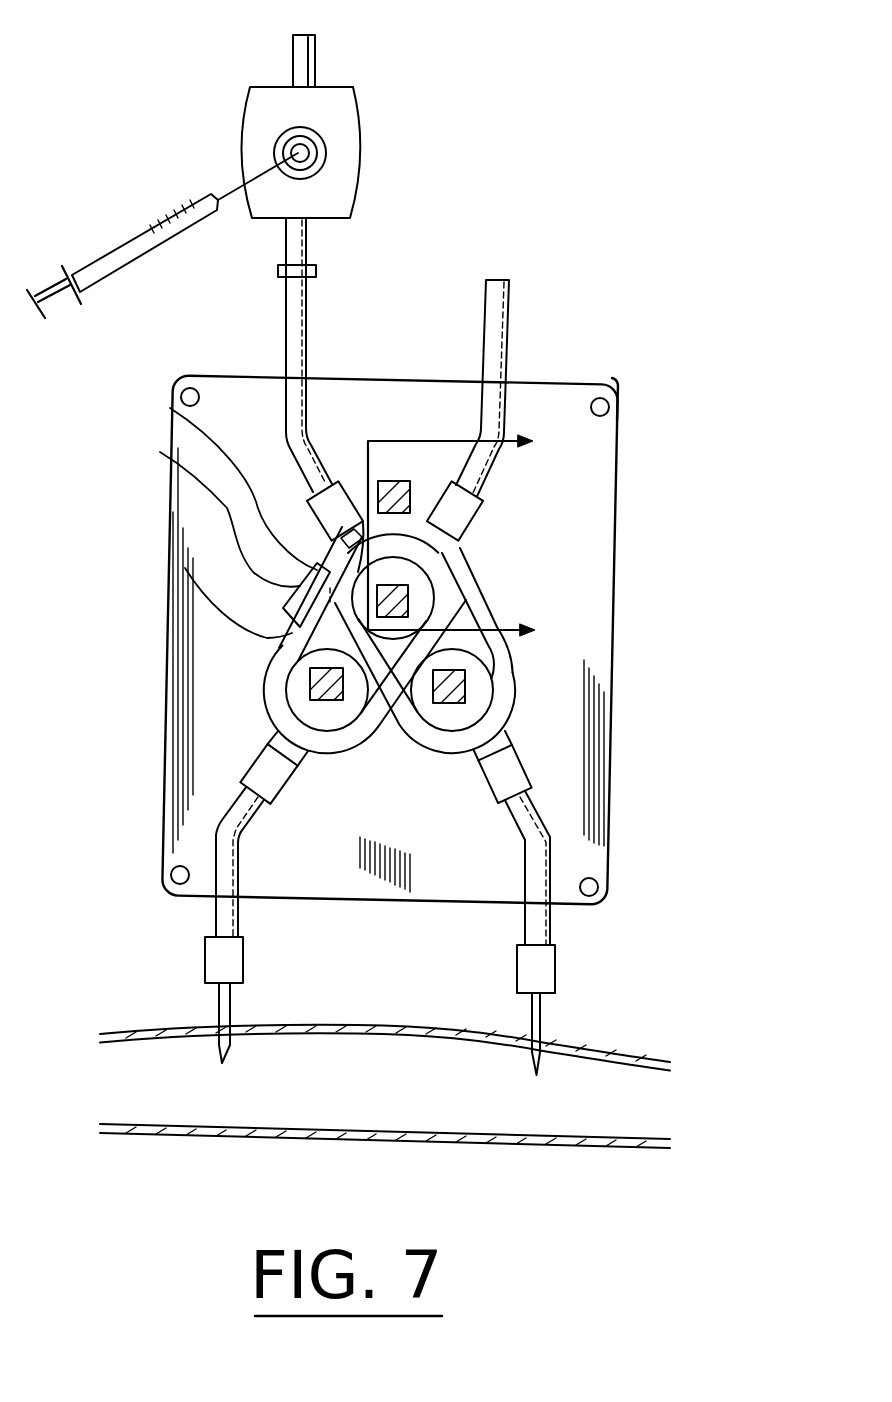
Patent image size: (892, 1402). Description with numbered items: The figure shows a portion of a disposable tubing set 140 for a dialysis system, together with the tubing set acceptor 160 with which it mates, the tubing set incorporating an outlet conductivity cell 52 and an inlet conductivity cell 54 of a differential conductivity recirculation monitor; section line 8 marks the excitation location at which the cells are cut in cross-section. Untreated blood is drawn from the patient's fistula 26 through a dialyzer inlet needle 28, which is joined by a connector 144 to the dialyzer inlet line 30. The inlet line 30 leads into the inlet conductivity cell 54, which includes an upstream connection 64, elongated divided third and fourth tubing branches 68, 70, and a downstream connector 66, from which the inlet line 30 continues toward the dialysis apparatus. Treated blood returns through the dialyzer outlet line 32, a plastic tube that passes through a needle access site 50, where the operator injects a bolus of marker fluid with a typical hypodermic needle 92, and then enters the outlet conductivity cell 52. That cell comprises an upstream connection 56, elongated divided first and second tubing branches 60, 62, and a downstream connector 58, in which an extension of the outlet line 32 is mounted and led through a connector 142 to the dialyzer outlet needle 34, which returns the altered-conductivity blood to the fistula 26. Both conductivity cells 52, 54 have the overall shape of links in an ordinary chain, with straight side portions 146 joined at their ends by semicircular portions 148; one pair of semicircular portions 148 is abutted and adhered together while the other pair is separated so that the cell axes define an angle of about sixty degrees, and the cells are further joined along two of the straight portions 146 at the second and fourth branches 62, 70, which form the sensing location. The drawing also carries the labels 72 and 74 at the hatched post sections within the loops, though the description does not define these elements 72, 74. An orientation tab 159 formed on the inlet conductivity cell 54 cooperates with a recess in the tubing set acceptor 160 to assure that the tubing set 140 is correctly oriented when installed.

The fistula 26 is at (473, 1142).
The dialyzer inlet needle 28 is at (213, 1012).
The dialyzer inlet line 30 is at (510, 335).
The dialyzer outlet line 32 is at (291, 72).
The dialyzer outlet needle 34 is at (545, 1036).
The needle access site 50 is at (367, 140).
The outlet conductivity cell 52 is at (502, 658).
The inlet conductivity cell 54 is at (270, 652).
The upstream connection 56 is at (384, 481).
The downstream connector 58 is at (535, 775).
The first tubing branch 60 is at (502, 640).
The second tubing branch 62 is at (505, 748).
The upstream connection 64 is at (273, 777).
The downstream connector 66 is at (490, 530).
The third tubing branch 68 is at (170, 496).
The fourth tubing branch 70 is at (370, 740).
The post 72 is at (393, 584).
The post 74 is at (467, 687).
The hypodermic needle 92 is at (177, 237).
The disposable tubing set 140 is at (500, 132).
The connector 142 is at (543, 973).
The connector 144 is at (243, 945).
The straight side portions 146 is at (176, 411).
The semicircular portions 148 is at (270, 693).
The orientation tab 159 is at (170, 462).
The tubing set acceptor 160 is at (637, 382).
The section line 8- 8 is at (467, 538).